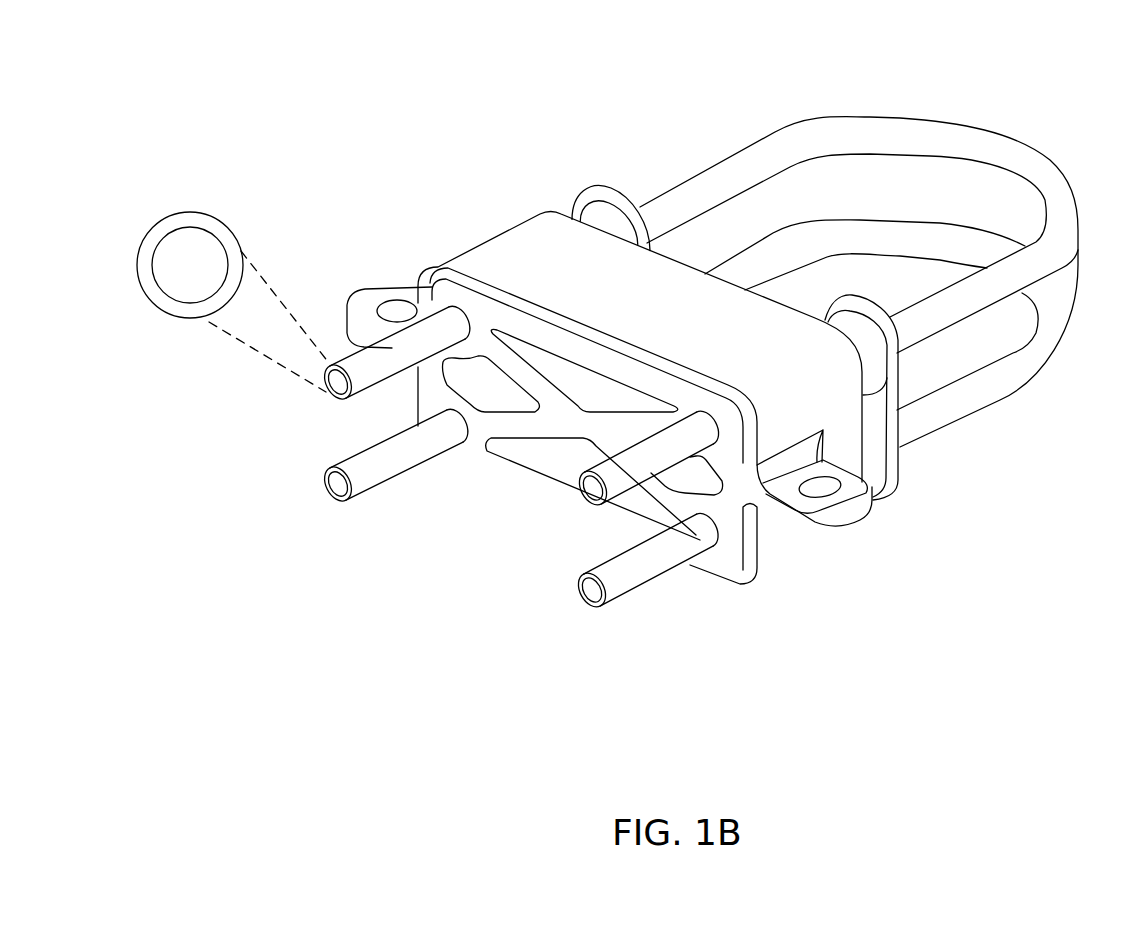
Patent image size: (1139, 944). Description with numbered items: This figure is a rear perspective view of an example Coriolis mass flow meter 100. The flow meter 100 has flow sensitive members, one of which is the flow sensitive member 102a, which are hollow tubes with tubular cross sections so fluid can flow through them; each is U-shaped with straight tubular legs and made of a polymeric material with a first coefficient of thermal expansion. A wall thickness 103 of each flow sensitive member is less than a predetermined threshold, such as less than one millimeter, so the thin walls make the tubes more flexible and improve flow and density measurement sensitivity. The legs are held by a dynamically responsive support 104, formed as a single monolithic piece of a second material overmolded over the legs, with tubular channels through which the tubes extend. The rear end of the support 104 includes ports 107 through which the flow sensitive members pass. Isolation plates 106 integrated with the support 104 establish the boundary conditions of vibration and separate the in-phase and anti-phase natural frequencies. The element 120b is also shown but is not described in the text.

The Coriolis mass flow meter 100 is at (254, 104).
The thickness 103 is at (192, 170).
The dynamically responsive support 104 is at (513, 251).
The isolation plates 106 is at (609, 190).
The ports 107 is at (438, 303).
The flow sensitive member 102a is at (1058, 204).
The secondary shackle bar 120b is at (1060, 318).